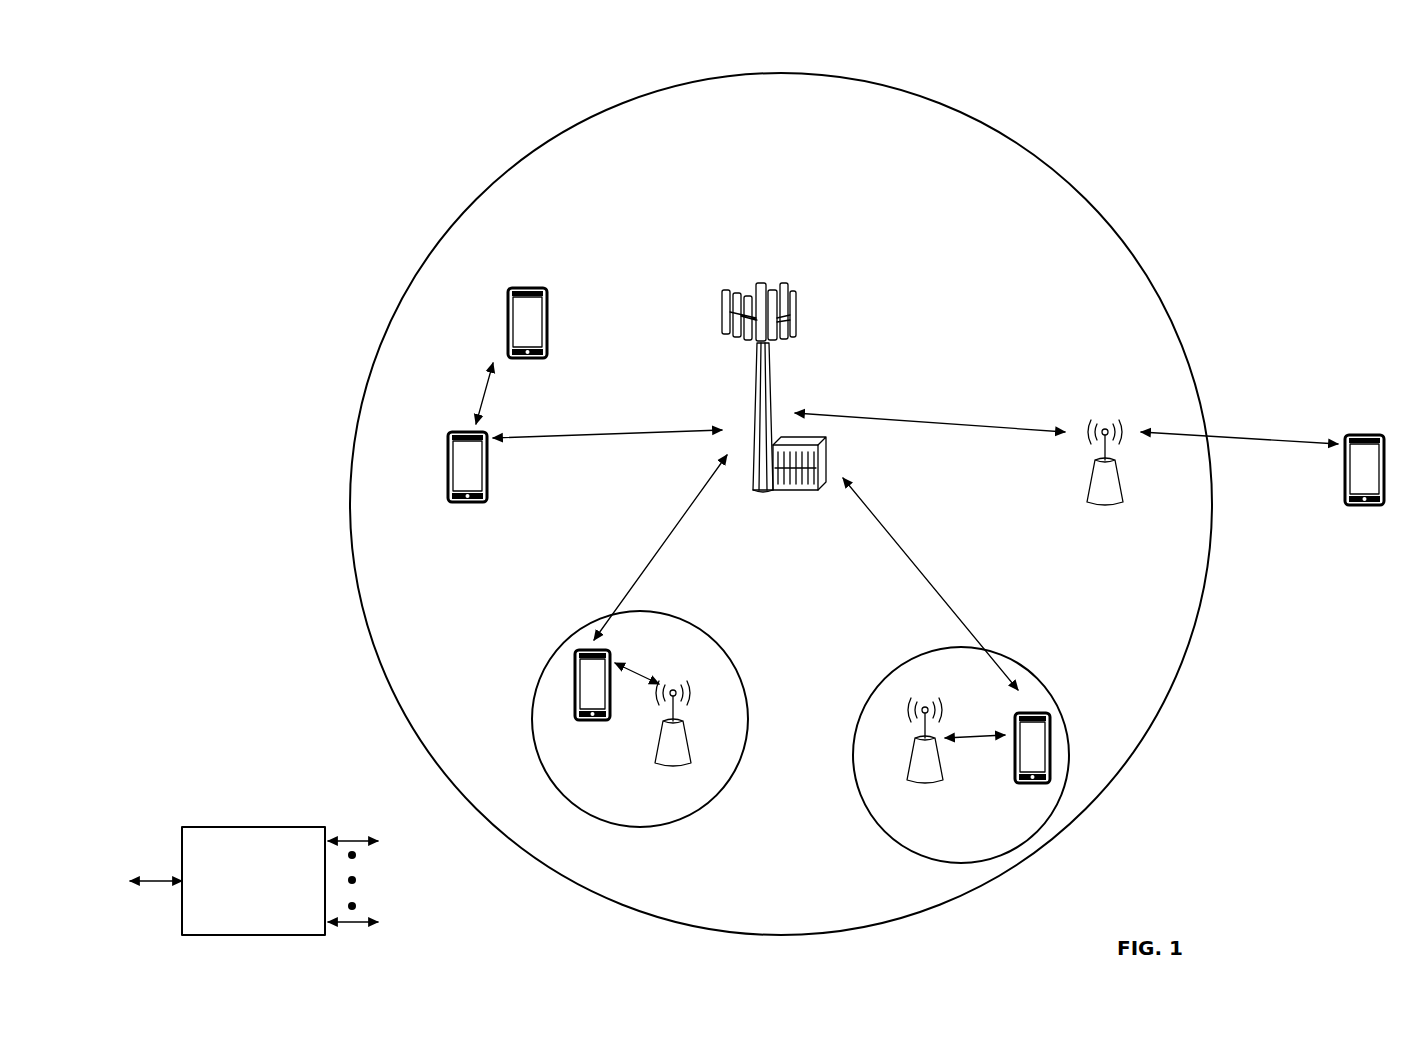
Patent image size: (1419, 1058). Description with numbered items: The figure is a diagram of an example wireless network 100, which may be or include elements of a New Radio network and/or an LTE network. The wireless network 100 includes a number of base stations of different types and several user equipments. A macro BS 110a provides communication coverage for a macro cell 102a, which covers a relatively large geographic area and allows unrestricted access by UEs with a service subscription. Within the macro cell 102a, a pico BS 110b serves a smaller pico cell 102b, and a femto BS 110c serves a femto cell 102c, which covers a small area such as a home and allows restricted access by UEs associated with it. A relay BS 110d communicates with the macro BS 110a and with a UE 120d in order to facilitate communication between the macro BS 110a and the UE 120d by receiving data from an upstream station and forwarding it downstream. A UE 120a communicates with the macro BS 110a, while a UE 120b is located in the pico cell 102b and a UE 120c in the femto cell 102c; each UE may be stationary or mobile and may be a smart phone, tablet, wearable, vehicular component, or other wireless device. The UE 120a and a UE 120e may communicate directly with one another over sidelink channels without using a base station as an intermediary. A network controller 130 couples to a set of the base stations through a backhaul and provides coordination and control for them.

The wireless network 100 is at (236, 66).
The macro cell 102a is at (1068, 183).
The pico cell 102b is at (738, 660).
The femto cell 102c is at (900, 670).
The macro BS 110a is at (768, 277).
The pico BS 110b is at (698, 756).
The femto BS 110c is at (908, 772).
The relay BS 110d is at (1105, 426).
The UE 120a is at (445, 466).
The UE 120b is at (586, 722).
The UE 120c is at (1022, 784).
The UE 120d is at (1378, 434).
The UE 120e is at (505, 312).
The network controller 130 is at (250, 826).